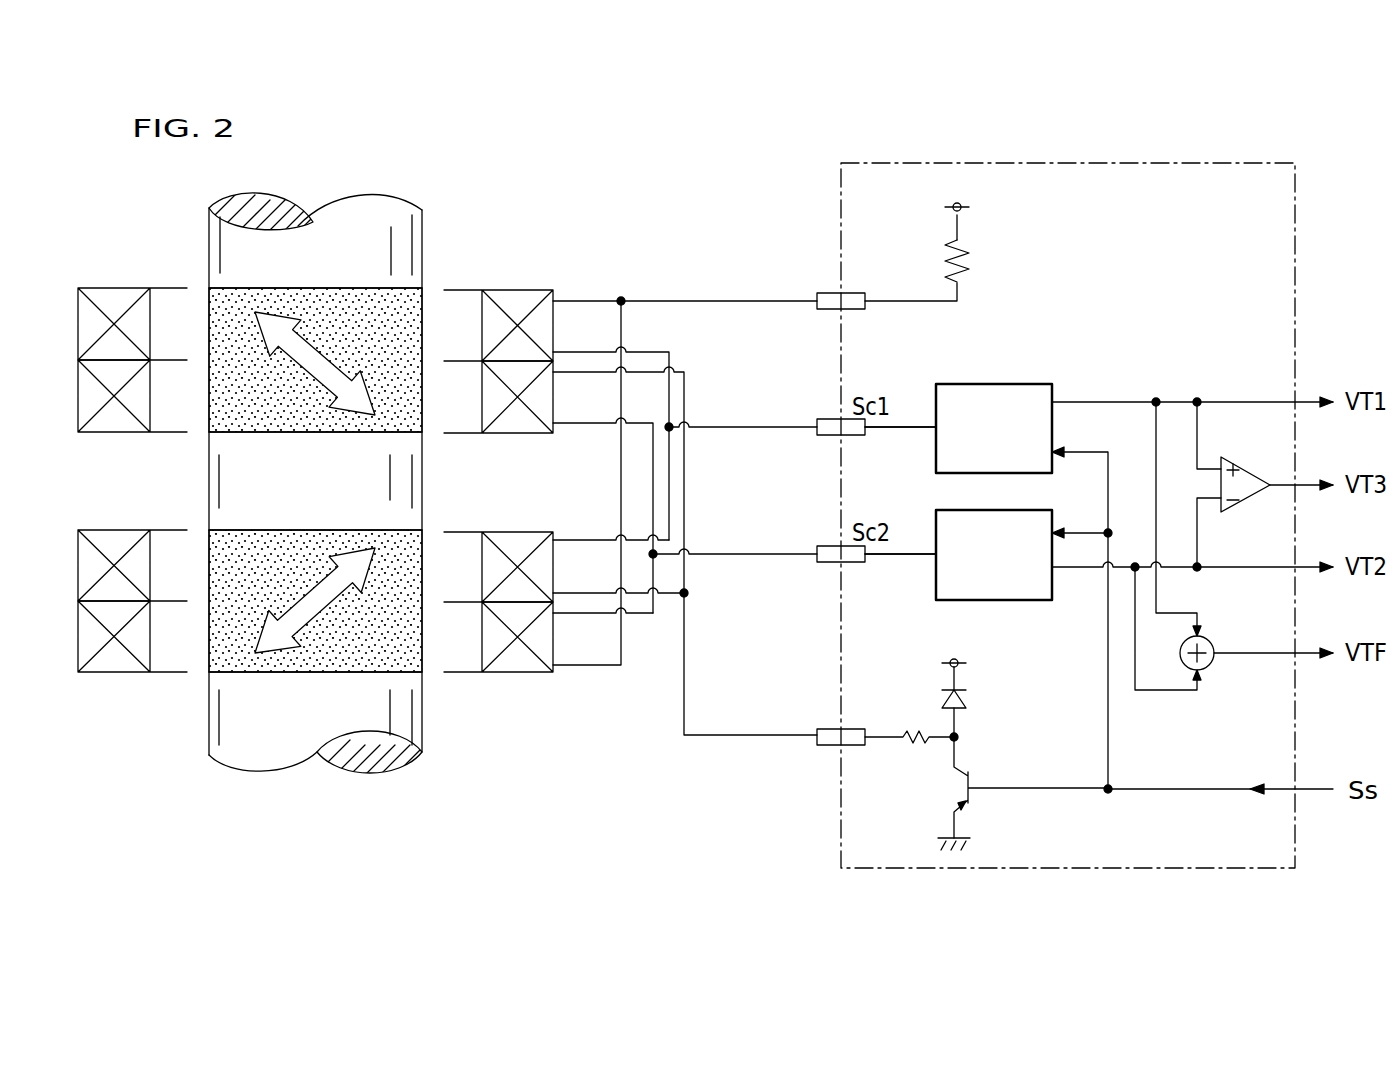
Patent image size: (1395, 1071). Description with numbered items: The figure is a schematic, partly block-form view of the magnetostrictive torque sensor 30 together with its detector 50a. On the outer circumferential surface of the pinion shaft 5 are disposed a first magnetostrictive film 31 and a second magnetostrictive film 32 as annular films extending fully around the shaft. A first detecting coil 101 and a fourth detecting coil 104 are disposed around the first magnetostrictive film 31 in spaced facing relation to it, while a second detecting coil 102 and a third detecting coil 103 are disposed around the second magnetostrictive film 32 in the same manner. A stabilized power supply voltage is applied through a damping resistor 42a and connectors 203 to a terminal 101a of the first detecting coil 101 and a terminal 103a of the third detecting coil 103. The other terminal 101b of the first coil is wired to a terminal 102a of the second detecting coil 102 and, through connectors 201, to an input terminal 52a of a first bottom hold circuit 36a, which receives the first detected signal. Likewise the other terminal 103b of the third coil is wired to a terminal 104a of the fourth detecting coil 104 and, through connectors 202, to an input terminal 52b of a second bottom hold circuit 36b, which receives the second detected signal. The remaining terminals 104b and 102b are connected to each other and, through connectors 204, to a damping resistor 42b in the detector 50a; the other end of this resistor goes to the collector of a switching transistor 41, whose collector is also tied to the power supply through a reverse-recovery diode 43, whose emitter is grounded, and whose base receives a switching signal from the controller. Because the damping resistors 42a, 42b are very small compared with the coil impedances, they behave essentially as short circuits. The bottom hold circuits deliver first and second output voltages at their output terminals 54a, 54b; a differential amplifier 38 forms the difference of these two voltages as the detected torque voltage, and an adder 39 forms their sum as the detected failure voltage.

The pinion shaft 5 is at (357, 205).
The first magnetostrictive film 31 is at (355, 290).
The second magnetostrictive film 32 is at (297, 534).
The first detecting coil 101 is at (110, 288).
The second detecting coil 102 is at (110, 530).
The third detecting coil 103 is at (110, 674).
The fourth detecting coil 104 is at (110, 433).
The terminal of the first detecting coil 101a is at (556, 300).
The other terminal of the first detecting coil 101b is at (556, 351).
The terminal of the second detecting coil 102a is at (556, 540).
The other terminal of the second detecting coil 102b is at (556, 592).
The terminal of the third detecting coil 103a is at (556, 667).
The other terminal of the third detecting coil 103b is at (556, 615).
The terminal of the fourth detecting coil 104a is at (556, 425).
The other terminal of the fourth detecting coil 104b is at (556, 374).
The magnetostrictive torque sensor 30 is at (606, 229).
The connectors 201 is at (801, 418).
The connectors 202 is at (801, 545).
The connectors 203 is at (798, 290).
The connectors 204 is at (801, 727).
The detector 50a is at (1023, 160).
The resistor 42a is at (971, 266).
The resistor 42b is at (918, 729).
The reverse-recovery diode 43 is at (985, 700).
The transistor 41 is at (972, 778).
The first bottom hold circuit 36a is at (1005, 384).
The second bottom hold circuit 36b is at (1005, 602).
The input terminal of the first bottom hold circuit 52a is at (935, 432).
The input terminal of the second bottom hold circuit 52b is at (935, 560).
The output terminal of the first bottom hold circuit 54a is at (1054, 400).
The output terminal of the second bottom hold circuit 54b is at (1054, 570).
The differential amplifier 38 is at (1248, 457).
The adder 39 is at (1213, 641).